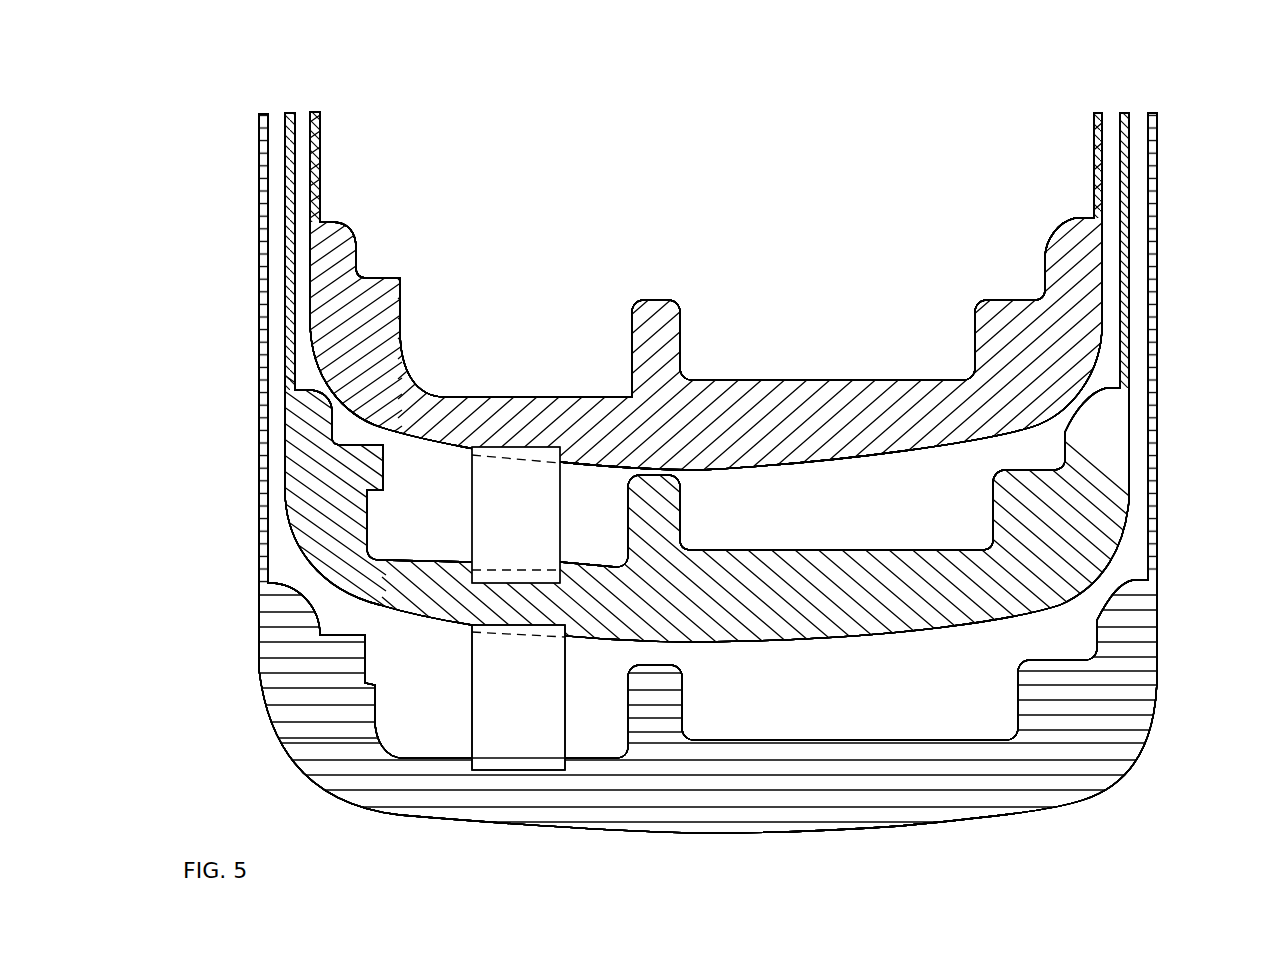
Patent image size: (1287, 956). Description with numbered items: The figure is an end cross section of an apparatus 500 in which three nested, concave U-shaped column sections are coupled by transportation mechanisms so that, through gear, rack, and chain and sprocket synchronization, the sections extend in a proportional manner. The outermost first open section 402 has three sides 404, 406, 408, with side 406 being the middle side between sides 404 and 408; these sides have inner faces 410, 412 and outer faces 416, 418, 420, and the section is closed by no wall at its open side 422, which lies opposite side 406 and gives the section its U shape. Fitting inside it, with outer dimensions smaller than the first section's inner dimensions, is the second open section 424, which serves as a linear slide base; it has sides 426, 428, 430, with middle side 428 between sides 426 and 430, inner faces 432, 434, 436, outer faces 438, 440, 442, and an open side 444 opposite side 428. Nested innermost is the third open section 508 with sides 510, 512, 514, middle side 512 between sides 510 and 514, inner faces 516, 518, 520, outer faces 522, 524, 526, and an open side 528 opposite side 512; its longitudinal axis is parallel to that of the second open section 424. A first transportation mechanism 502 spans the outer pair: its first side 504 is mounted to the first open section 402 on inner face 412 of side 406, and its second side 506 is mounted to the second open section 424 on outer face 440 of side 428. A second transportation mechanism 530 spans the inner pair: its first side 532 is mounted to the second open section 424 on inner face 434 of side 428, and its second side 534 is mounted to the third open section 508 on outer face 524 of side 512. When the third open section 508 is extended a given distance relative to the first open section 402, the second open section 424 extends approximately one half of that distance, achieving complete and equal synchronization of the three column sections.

The apparatus 500 is at (1162, 806).
The first open section 402 is at (318, 710).
The side 404 is at (263, 445).
The side 406 is at (752, 790).
The side 408 is at (1153, 497).
The inner face 410 is at (350, 505).
The inner face 412 is at (950, 735).
The outer face 416 is at (265, 520).
The outer face 418 is at (810, 838).
The outer face 420 is at (1157, 446).
The open side 422 is at (278, 123).
The second open section 424 is at (358, 578).
The side 426 is at (286, 328).
The side 428 is at (905, 610).
The side 430 is at (1125, 335).
The inner face 432 is at (380, 372).
The inner face 434 is at (785, 550).
The inner face 436 is at (1120, 272).
The outer face 438 is at (286, 292).
The outer face 440 is at (790, 645).
The outer face 442 is at (1128, 276).
The open side 444 is at (305, 123).
The first transportation mechanism 502 is at (498, 727).
The first side 504 is at (548, 770).
The second side 506 is at (523, 630).
The third open section 508 is at (457, 422).
The side 510 is at (312, 195).
The side 512 is at (893, 437).
The side 514 is at (1097, 188).
The inner face 516 is at (317, 218).
The inner face 518 is at (921, 375).
The inner face 520 is at (1099, 130).
The outer face 522 is at (315, 158).
The outer face 524 is at (982, 442).
The outer face 526 is at (1103, 130).
The open side 528 is at (483, 140).
The second transportation mechanism 530 is at (503, 523).
The first side 532 is at (522, 583).
The second side 534 is at (520, 445).